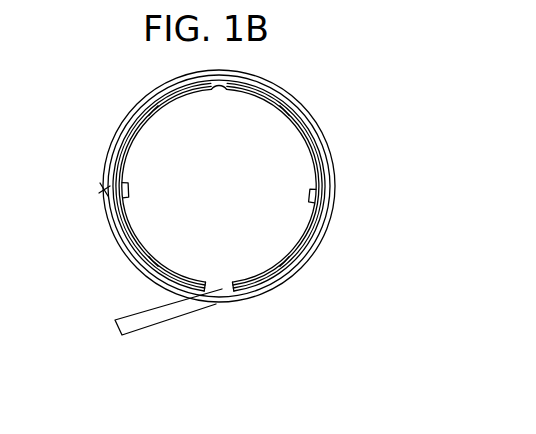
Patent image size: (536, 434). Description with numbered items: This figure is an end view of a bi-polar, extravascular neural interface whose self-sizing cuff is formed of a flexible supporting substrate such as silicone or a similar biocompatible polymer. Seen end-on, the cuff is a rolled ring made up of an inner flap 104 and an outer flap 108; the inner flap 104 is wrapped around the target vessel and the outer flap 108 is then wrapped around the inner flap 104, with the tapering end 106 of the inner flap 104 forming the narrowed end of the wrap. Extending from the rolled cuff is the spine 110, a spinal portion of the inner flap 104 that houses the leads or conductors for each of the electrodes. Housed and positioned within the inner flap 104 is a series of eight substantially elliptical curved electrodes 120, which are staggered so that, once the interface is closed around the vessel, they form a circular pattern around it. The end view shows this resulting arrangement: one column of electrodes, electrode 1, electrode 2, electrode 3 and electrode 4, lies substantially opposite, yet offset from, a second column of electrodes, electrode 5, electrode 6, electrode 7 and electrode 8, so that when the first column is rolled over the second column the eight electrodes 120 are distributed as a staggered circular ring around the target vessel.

The inner flap 104 is at (121, 125).
The tapering end 106 is at (102, 188).
The outer flap 108 is at (338, 189).
The spine 110 is at (157, 333).
The electrodes 120 is at (286, 165).
The electrode 1 is at (158, 129).
The electrode 2 is at (159, 249).
The electrode 3 is at (276, 252).
The electrode 4 is at (282, 131).
The electrode 5 is at (218, 105).
The electrode 6 is at (130, 191).
The electrode 7 is at (216, 288).
The electrode 8 is at (305, 203).